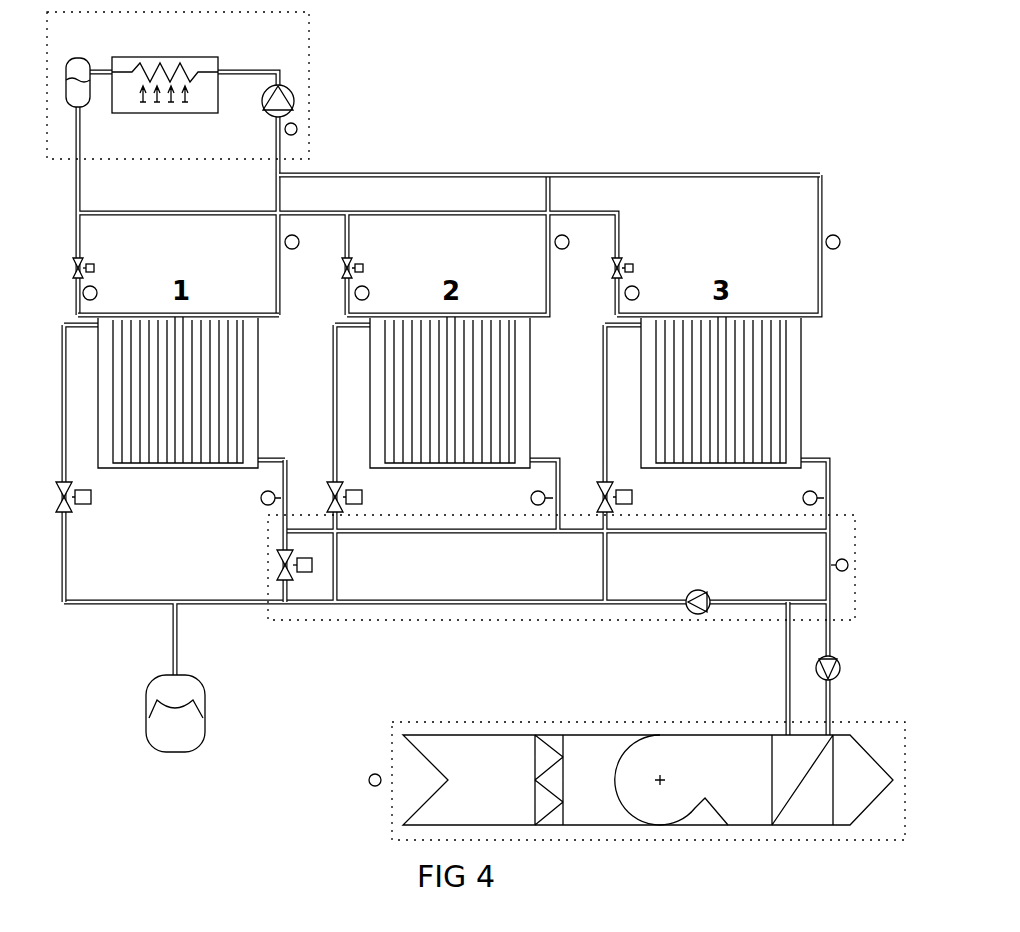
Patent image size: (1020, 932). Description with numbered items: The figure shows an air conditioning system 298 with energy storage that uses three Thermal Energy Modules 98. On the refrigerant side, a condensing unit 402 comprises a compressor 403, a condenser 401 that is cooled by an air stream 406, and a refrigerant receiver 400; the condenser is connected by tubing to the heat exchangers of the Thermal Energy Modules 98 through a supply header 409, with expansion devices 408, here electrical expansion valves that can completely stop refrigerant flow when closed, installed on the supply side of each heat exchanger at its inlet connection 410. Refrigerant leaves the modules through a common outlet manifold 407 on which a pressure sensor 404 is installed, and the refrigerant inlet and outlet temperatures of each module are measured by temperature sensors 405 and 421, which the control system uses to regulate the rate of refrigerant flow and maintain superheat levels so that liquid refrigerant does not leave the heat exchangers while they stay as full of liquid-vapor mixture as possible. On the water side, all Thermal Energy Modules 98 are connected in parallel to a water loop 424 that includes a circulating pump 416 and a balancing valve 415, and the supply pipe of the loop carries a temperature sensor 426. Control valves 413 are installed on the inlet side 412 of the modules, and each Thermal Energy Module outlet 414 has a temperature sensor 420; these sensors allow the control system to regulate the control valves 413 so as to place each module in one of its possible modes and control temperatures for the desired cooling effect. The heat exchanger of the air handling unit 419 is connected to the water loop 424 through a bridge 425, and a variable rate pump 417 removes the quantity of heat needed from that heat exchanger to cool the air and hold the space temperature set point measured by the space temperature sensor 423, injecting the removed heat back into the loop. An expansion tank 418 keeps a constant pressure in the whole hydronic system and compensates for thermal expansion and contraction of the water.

The air conditioning system 298 is at (649, 96).
The Thermal Energy Module 98 is at (175, 470).
The refrigerant receiver 400 is at (75, 57).
The condenser 401 is at (165, 57).
The condensing unit 402 is at (312, 41).
The compressor 403 is at (296, 98).
The pressure sensor 404 is at (298, 127).
The temperature sensor 405 is at (97, 293).
The air stream 406 is at (138, 107).
The common outlet manifold 407 is at (442, 172).
The expansion device 408 is at (94, 268).
The supply header pipe 409 is at (75, 314).
The collector inlet connection 410 is at (266, 324).
The inlet side 412 is at (58, 336).
The control valve 413 is at (91, 497).
The Thermal Energy Module outlet 414 is at (283, 456).
The balancing valve 415 is at (277, 553).
The circulating pump 416 is at (699, 590).
The variable rate pump 417 is at (840, 668).
The expansion tank 418 is at (145, 701).
The air handling unit 419 is at (390, 733).
The temperature sensor 420 is at (260, 498).
The temperature sensor 421 is at (299, 242).
The space temperature sensor 423 is at (368, 784).
The water loop 424 is at (561, 583).
The bridge 425 is at (810, 597).
The temperature sensor 426 is at (848, 565).